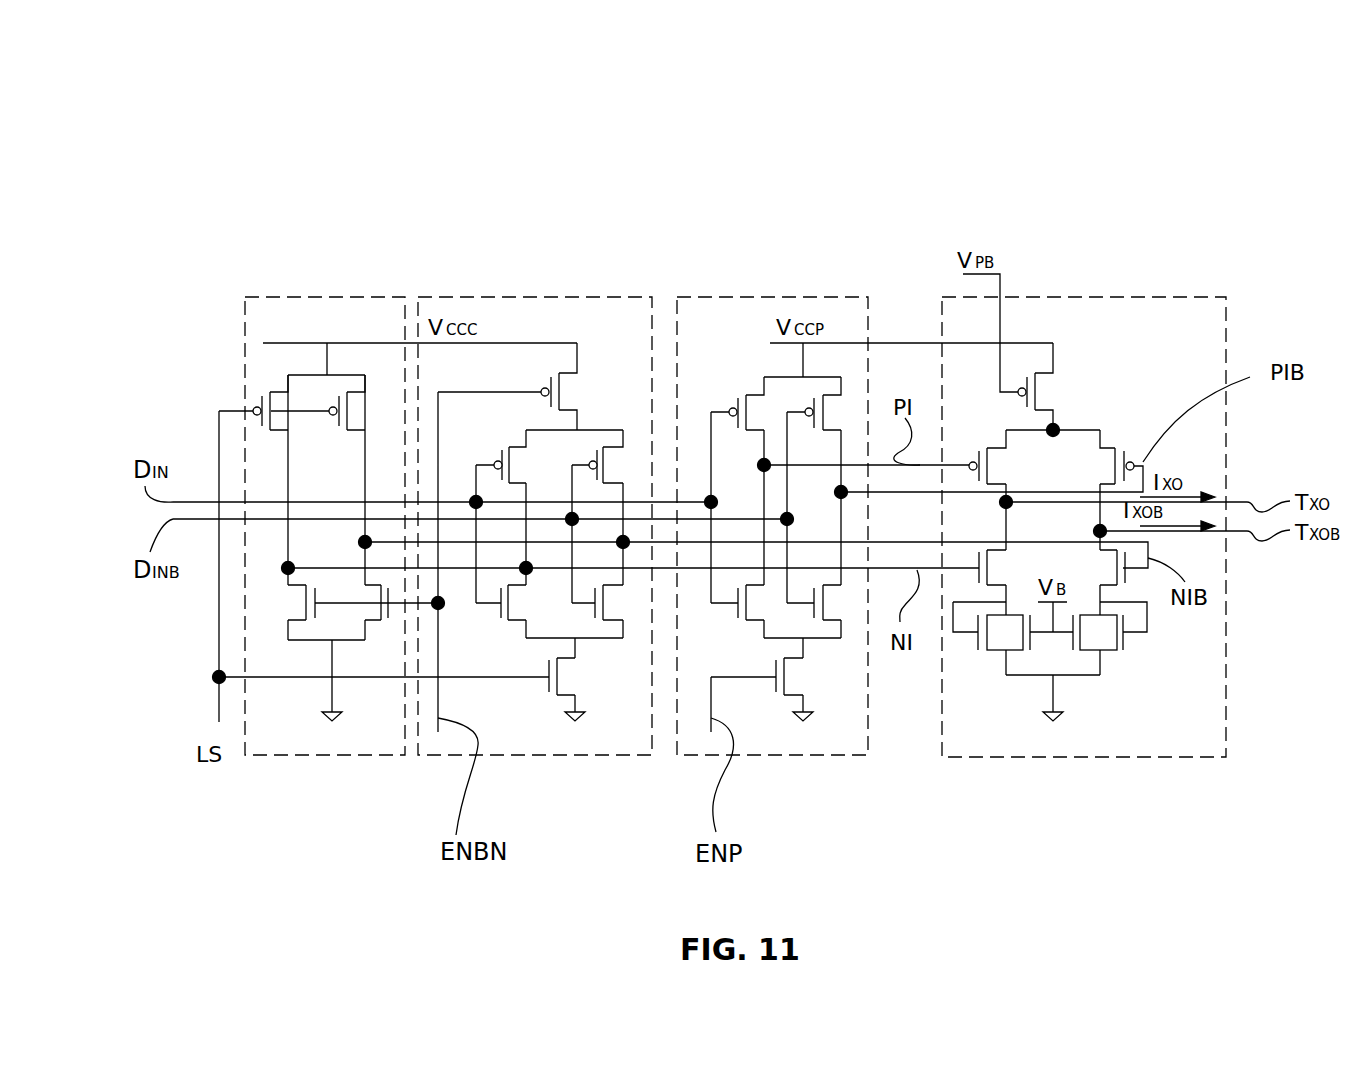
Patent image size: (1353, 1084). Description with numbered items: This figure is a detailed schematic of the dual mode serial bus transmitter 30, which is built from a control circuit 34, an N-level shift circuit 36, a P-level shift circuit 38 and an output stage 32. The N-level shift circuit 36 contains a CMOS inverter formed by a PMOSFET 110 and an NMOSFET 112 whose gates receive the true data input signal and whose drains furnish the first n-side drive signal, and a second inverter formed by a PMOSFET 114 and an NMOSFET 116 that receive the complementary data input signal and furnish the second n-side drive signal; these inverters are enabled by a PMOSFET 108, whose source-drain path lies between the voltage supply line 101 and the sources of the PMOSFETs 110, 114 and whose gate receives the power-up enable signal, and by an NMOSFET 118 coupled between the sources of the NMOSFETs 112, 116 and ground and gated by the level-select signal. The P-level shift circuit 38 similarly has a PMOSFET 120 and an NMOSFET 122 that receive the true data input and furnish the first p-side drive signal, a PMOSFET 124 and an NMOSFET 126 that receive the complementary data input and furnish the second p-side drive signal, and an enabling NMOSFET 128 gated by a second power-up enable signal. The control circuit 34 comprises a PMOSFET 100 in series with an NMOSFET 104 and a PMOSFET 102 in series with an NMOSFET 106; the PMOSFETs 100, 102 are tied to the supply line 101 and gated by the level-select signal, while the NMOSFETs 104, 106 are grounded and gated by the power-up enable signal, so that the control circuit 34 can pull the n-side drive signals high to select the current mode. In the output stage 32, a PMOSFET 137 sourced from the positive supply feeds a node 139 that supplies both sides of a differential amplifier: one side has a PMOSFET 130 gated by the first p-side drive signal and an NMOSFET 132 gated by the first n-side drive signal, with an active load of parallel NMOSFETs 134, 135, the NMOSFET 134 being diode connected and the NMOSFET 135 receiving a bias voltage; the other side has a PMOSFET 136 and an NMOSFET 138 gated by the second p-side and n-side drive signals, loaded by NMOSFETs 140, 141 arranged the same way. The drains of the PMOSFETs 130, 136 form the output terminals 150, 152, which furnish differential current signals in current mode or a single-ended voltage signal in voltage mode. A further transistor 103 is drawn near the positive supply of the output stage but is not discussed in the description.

The transmitter 30 is at (793, 158).
The output stage 32 is at (1063, 297).
The control circuit 34 is at (245, 320).
The N-level shift circuit 36 is at (453, 297).
The P-level shift circuit 38 is at (703, 297).
The PMOSFET 100 is at (277, 392).
The voltage supply line 101 is at (525, 342).
The PMOSFET 102 is at (357, 392).
The PMOS transistor 103 is at (1022, 343).
The NMOSFET 104 is at (292, 623).
The NMOSFET 106 is at (372, 623).
The PMOSFET 108 is at (565, 372).
The PMOSFET 110 is at (519, 446).
The NMOSFET 112 is at (518, 622).
The PMOSFET 114 is at (615, 443).
The NMOSFET 116 is at (613, 623).
The NMOSFET 118 is at (557, 698).
The PMOSFET 120 is at (763, 394).
The NMOSFET 122 is at (755, 627).
The PMOSFET 124 is at (835, 393).
The NMOSFET 126 is at (830, 625).
The NMOSFET 128 is at (790, 697).
The PMOSFET 130 is at (990, 447).
The NMOSFET 132 is at (1000, 550).
The NMOSFET 134 is at (997, 648).
The NMOSFET 135 is at (1040, 645).
The PMOSFET 136 is at (1053, 430).
The PMOSFET 137 is at (1045, 384).
The NMOSFET 138 is at (1126, 576).
The node 139 is at (1110, 432).
The NMOSFET 140 is at (1107, 645).
The NMOSFET 141 is at (1073, 644).
The output terminal 150 is at (1232, 502).
The output terminal 152 is at (1232, 531).